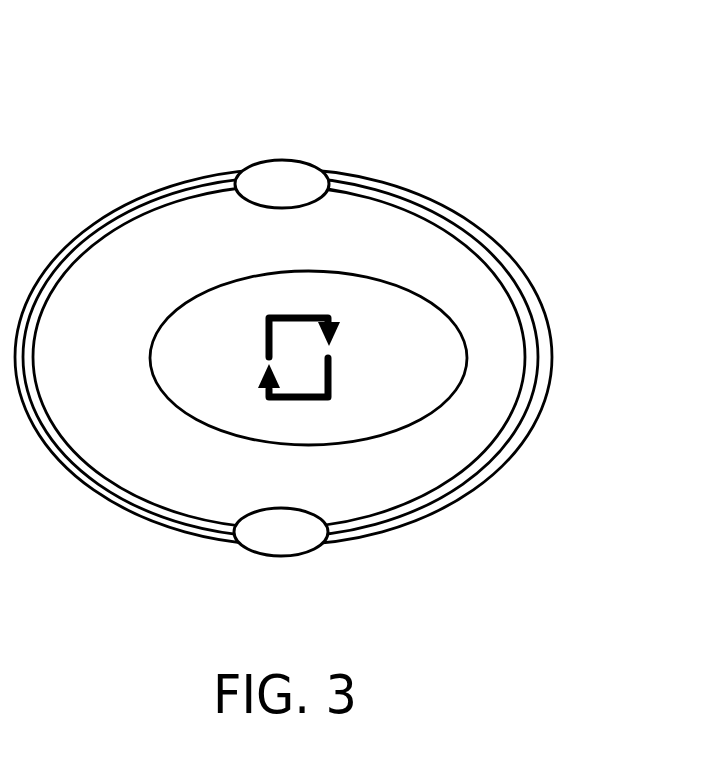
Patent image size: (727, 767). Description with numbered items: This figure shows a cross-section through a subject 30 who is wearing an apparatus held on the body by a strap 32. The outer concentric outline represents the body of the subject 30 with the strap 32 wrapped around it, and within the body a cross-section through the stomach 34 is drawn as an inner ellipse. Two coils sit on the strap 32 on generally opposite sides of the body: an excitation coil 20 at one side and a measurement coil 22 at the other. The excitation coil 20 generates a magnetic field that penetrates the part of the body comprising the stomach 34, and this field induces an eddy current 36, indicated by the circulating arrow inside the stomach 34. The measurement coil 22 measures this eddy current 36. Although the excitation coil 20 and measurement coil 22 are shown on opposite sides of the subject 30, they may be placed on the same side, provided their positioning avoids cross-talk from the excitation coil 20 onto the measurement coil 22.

The excitation coil 20 is at (278, 557).
The measurement coil 22 is at (278, 160).
The subject 30 is at (526, 353).
The strap 32 is at (528, 281).
The stomach 34 is at (150, 355).
The eddy current 36 is at (262, 356).